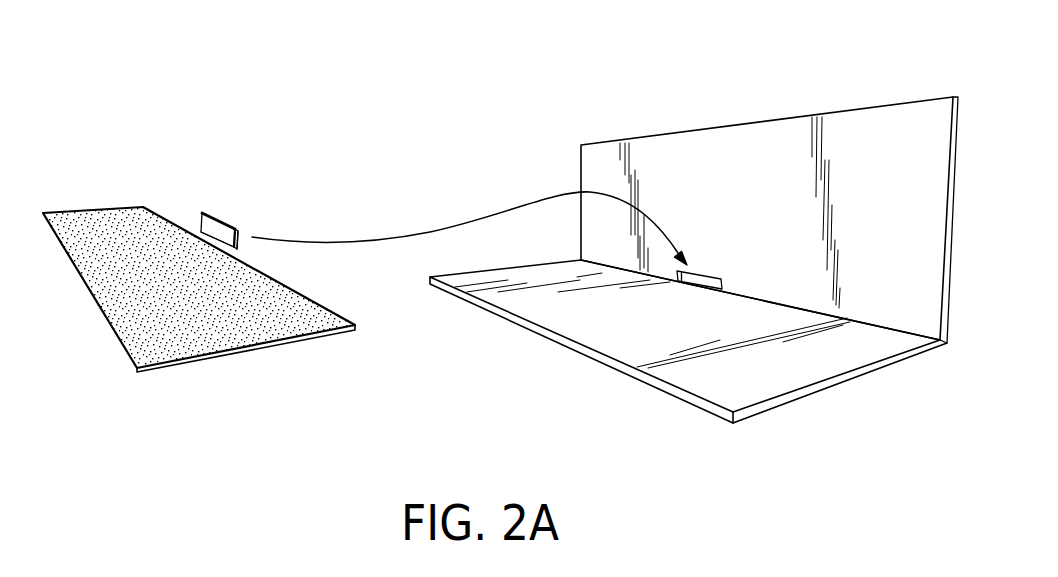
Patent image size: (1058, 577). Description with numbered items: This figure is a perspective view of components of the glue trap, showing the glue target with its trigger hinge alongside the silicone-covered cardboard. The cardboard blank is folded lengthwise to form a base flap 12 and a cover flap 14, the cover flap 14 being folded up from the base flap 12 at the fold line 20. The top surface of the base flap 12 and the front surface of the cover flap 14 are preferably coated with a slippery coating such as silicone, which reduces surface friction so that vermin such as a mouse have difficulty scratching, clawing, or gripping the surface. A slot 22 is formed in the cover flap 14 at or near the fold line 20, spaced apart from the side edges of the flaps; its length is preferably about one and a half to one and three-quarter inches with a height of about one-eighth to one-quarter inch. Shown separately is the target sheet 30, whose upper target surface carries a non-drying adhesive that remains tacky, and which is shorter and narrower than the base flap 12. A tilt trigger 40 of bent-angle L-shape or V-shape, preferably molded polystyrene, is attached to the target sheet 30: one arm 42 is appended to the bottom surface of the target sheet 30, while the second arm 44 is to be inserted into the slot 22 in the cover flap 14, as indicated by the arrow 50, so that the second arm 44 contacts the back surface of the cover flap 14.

The base flap 12 is at (693, 373).
The cover flap 14 is at (860, 145).
The fold line 20 is at (907, 330).
The slot 22 is at (700, 273).
The target sheet 30 is at (98, 210).
The tilt trigger 40 is at (222, 218).
The arm 42 is at (197, 232).
The second arm 44 is at (243, 227).
The arrow 50 is at (428, 232).